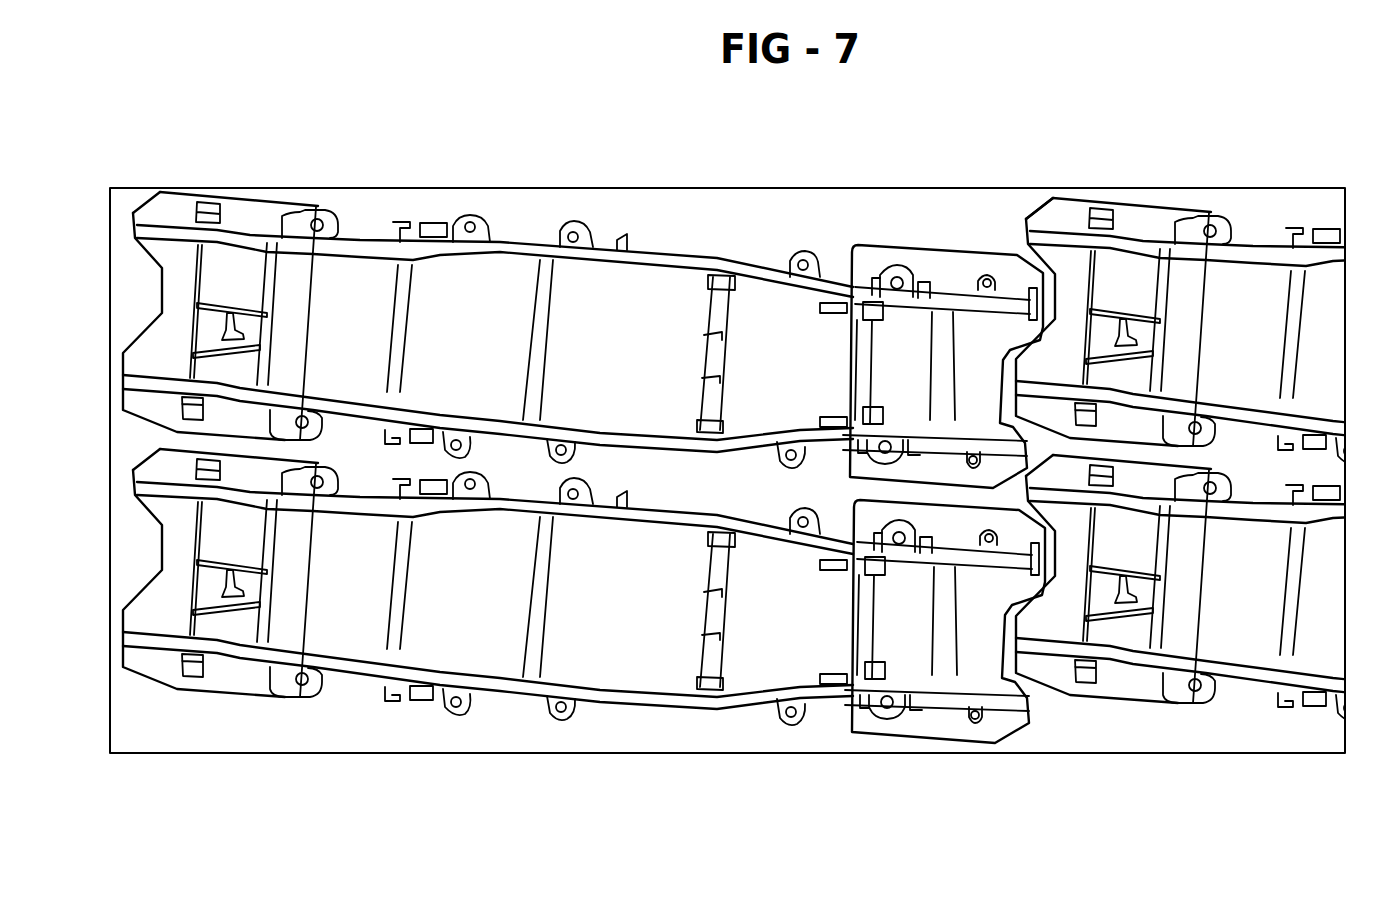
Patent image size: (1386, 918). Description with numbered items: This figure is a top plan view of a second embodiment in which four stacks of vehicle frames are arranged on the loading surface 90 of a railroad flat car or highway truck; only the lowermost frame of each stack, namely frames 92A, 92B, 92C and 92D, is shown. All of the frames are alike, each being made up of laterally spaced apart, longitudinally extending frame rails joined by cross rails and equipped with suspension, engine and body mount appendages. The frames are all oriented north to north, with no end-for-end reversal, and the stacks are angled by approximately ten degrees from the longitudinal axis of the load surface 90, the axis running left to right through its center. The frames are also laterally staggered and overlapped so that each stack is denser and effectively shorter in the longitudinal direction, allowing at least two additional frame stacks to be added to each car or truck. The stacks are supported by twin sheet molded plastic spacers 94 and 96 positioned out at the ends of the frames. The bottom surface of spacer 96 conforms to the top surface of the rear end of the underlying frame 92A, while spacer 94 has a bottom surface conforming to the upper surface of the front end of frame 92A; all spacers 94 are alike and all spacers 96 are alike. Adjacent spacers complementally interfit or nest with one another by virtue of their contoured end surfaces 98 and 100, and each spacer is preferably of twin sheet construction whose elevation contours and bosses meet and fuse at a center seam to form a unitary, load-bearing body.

The loading surface 90 is at (860, 211).
The frame 92A is at (754, 258).
The frame 92B is at (682, 712).
The frame 92C is at (1254, 238).
The frame 92D is at (1242, 686).
The spacer 94 is at (253, 203).
The spacer 96 is at (927, 245).
The contoured end surface 98 is at (1011, 300).
The contoured end surface 100 is at (1043, 215).